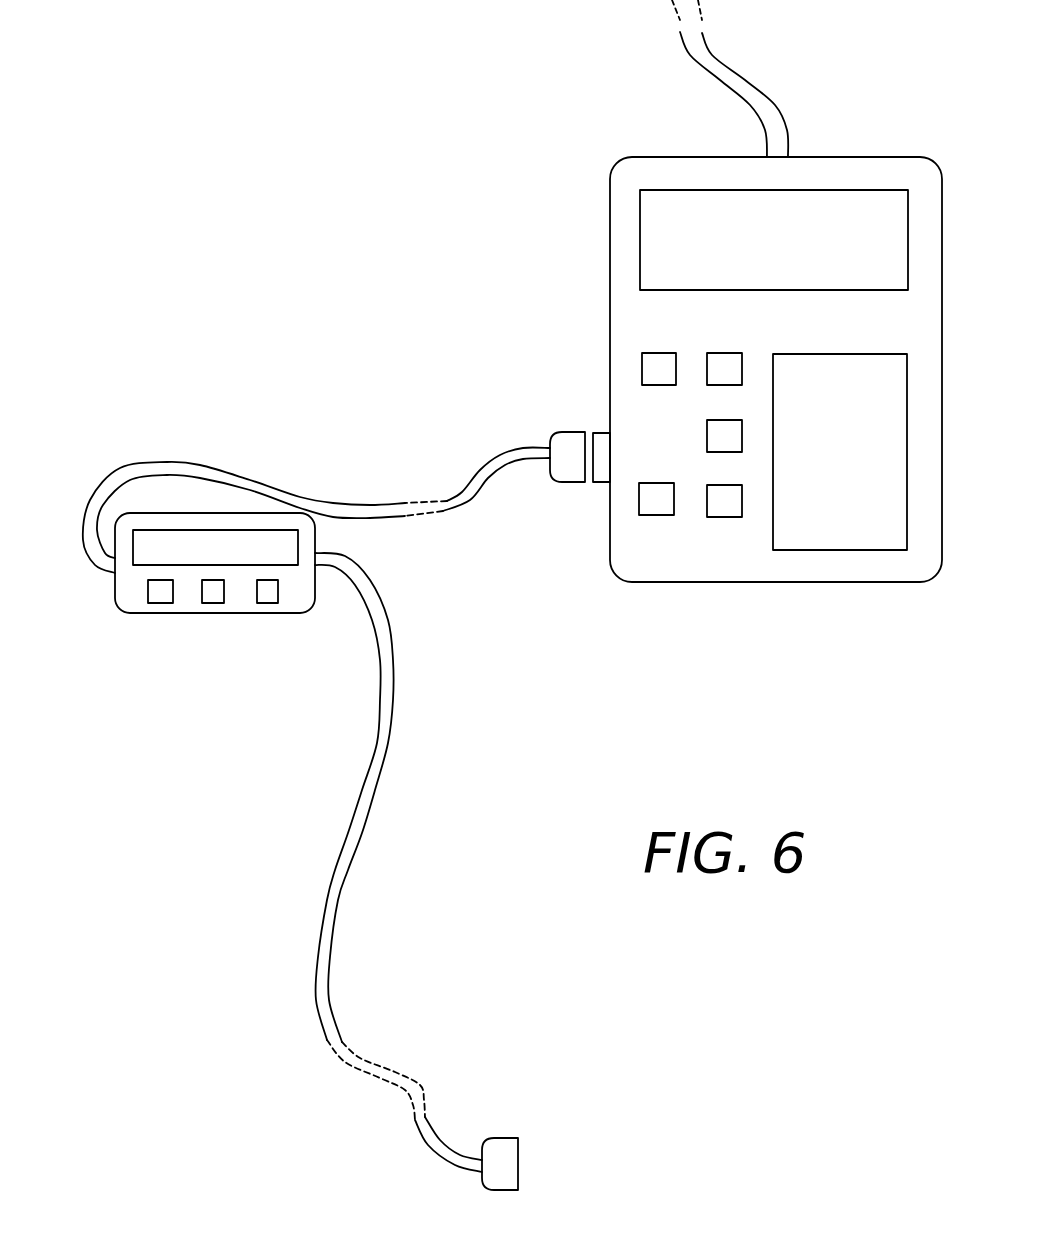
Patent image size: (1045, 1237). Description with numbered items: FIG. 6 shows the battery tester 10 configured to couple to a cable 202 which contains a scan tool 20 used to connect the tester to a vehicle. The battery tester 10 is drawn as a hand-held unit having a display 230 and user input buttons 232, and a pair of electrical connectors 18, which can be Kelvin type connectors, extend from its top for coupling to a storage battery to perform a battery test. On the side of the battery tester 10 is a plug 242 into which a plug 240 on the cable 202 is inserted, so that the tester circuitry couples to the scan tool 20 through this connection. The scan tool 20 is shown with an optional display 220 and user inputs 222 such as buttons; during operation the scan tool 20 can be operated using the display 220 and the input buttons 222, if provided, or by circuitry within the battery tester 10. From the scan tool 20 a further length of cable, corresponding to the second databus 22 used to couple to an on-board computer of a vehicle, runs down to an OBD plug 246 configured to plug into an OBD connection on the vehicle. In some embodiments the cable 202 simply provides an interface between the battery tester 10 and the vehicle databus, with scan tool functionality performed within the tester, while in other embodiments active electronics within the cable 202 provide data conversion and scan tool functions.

The battery tester 10 is at (803, 578).
The electrical connectors 18 is at (778, 113).
The scan tool 20 is at (288, 615).
The second databus 22 is at (333, 937).
The cable 202 is at (125, 438).
The display 220 is at (233, 520).
The user inputs 222 is at (168, 603).
The display 230 is at (663, 195).
The user input buttons 232 is at (682, 512).
The plug 240 is at (557, 433).
The plug 242 is at (593, 432).
The OBD plug 246 is at (502, 1138).